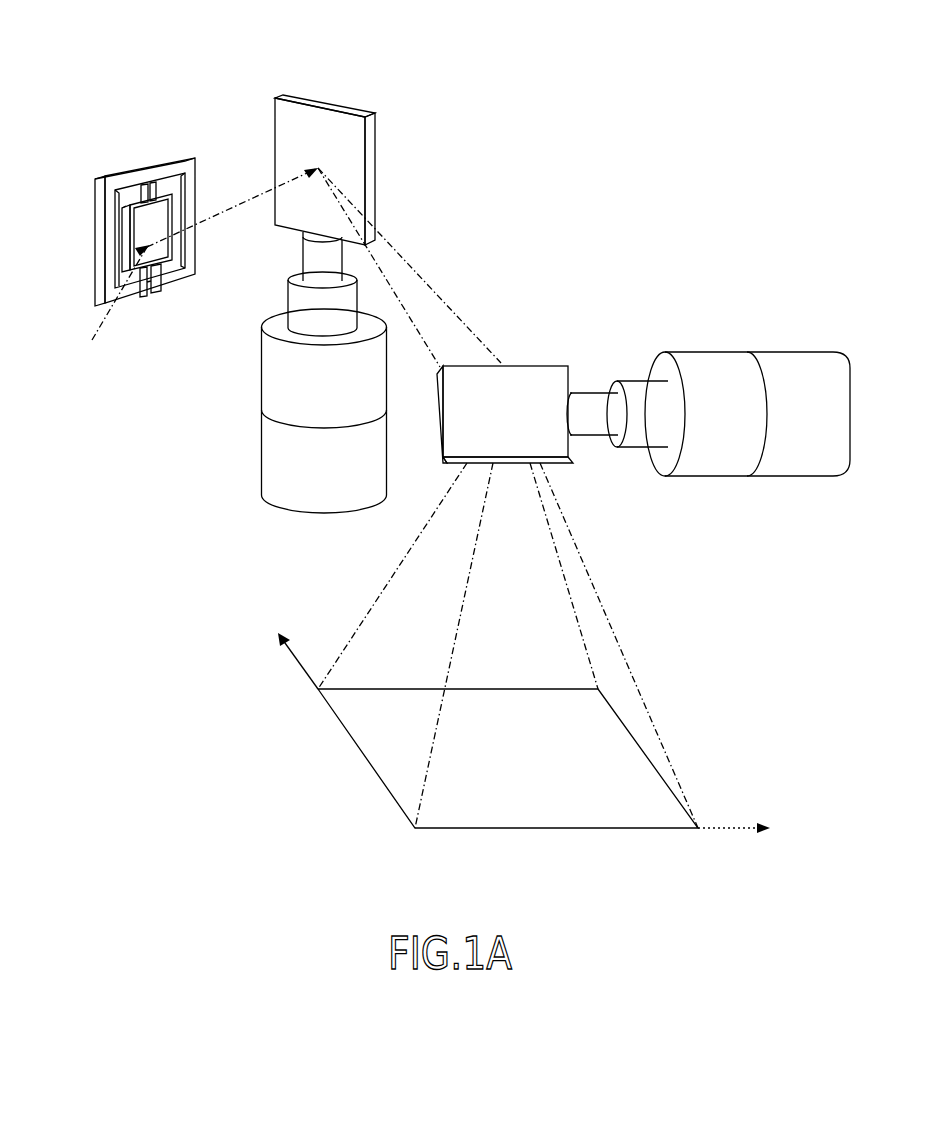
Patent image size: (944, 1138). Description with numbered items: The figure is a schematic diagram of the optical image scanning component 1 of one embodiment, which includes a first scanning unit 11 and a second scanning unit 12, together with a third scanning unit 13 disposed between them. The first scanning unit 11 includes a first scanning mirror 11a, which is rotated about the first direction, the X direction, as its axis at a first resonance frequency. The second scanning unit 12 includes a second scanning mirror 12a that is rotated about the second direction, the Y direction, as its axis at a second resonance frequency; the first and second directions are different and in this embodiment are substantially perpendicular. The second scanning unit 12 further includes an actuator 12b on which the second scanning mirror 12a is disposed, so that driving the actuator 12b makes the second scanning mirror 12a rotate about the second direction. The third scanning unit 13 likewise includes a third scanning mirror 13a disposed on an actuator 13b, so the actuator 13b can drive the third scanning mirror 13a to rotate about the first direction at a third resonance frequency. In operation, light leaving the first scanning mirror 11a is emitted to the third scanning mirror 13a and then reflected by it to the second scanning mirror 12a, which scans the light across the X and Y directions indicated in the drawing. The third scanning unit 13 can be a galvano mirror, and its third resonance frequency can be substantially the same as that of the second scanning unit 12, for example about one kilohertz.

The optical image scanning component 1 is at (167, 55).
The first scanning unit 11 is at (148, 166).
The first scanning mirror 11a is at (138, 228).
The second scanning unit 12 is at (591, 264).
The second scanning mirror 12a is at (530, 372).
The actuator 12b is at (712, 356).
The third scanning unit 13 is at (314, 64).
The third scanning mirror 13a is at (352, 113).
The actuator 13b is at (268, 380).